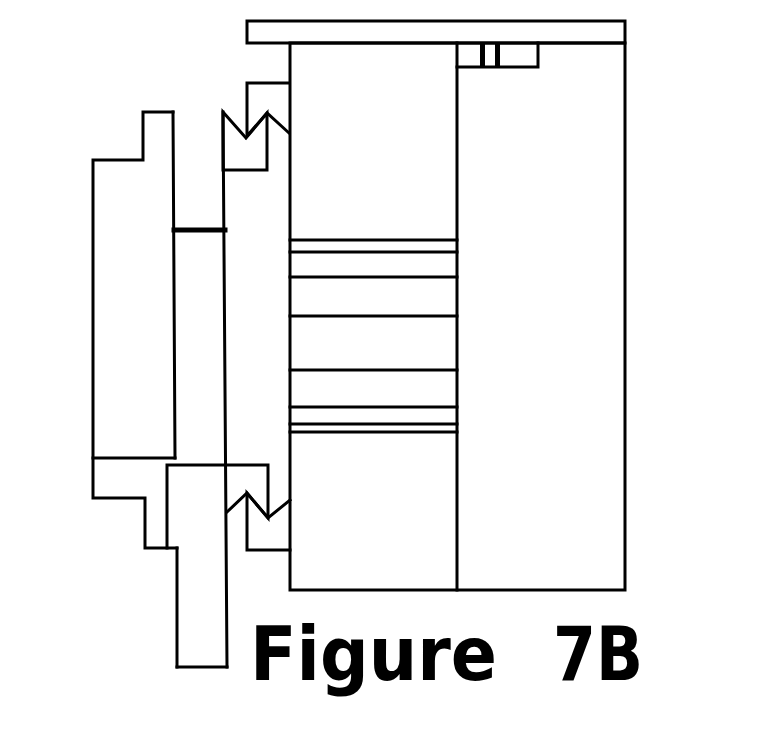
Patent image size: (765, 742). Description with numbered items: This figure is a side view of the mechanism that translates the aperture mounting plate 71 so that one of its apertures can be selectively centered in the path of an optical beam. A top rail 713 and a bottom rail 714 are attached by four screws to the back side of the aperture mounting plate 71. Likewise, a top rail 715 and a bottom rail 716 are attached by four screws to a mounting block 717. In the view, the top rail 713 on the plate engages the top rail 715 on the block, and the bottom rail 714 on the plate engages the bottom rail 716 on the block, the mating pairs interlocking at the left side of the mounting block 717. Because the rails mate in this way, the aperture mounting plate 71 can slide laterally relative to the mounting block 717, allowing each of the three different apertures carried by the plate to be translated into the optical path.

The aperture mounting plate 71 is at (125, 182).
The top rail 713 is at (242, 150).
The bottom rail 714 is at (240, 487).
The top rail 715 is at (263, 93).
The bottom rail 716 is at (265, 530).
The mounting block 717 is at (415, 535).